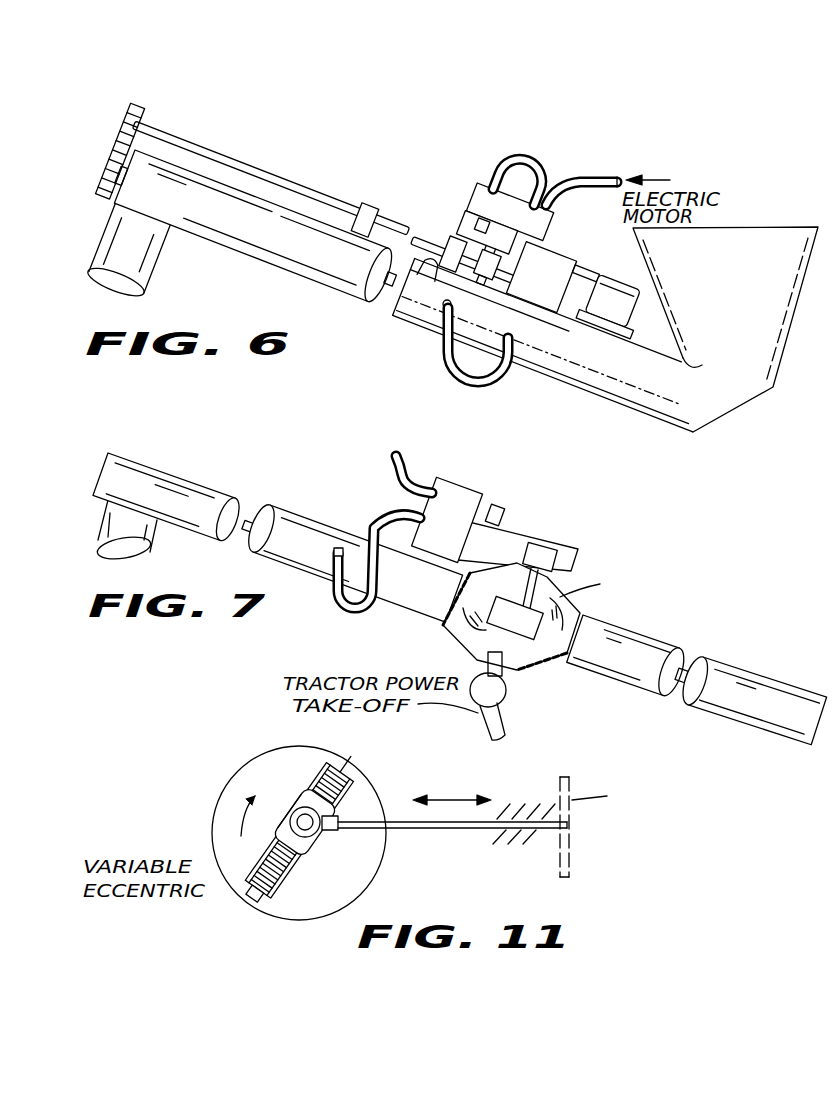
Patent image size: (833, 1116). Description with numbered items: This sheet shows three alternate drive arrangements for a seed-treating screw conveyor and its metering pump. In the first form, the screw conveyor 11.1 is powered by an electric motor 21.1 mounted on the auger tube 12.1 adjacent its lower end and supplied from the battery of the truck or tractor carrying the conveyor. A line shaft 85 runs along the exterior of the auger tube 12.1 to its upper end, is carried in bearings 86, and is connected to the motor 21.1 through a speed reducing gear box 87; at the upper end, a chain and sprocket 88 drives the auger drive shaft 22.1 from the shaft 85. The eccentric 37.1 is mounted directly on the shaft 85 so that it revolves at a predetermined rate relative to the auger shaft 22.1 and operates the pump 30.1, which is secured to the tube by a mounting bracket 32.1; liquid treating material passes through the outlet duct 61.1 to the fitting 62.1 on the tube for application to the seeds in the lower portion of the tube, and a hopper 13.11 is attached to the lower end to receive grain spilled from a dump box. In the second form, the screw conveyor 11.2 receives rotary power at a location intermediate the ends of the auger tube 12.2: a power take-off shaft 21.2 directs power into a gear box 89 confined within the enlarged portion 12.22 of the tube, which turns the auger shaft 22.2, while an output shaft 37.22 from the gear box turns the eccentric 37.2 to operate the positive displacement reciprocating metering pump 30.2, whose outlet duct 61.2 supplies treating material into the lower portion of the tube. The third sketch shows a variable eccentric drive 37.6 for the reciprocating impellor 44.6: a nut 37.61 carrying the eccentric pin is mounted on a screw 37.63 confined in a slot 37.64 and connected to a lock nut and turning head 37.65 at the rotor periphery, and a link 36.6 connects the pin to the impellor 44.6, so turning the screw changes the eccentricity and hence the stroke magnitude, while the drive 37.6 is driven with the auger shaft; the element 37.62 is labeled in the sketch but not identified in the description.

In FIG. 6, the chain and sprocket 88 is at (118, 143).
In FIG. 6, the line shaft 85 is at (280, 180).
In FIG. 6, the bearings 86 is at (368, 205).
In FIG. 6, the auger drive shaft 22.1 is at (120, 170).
In FIG. 6, the screw conveyor 11.1 is at (273, 250).
In FIG. 6, the pump 30.1 is at (470, 187).
In FIG. 6, the mounting bracket 32.1 is at (467, 228).
In FIG. 6, the outlet duct 61.1 is at (545, 168).
In FIG. 6, the speed reducing gear box 87 is at (550, 263).
In FIG. 6, the electric motor 21.1 is at (627, 300).
In FIG. 6, the hopper 13.11 is at (762, 342).
In FIG. 6, the auger tube 12.1 is at (667, 412).
In FIG. 6, the fitting 62.1 is at (443, 300).
In FIG. 6, the eccentric 37.1 is at (482, 272).
In FIG. 7, the metering pump 30.2 is at (455, 500).
In FIG. 7, the eccentric 37.2 is at (532, 550).
In FIG. 7, the output shaft 37.22 is at (530, 560).
In FIG. 7, the enlarged portion 12.22 is at (535, 663).
In FIG. 7, the auger shaft 22.2 is at (573, 637).
In FIG. 7, the screw conveyor 11.2 is at (663, 644).
In FIG. 7, the auger tube 12.2 is at (640, 677).
In FIG. 7, the gear box 89 is at (493, 623).
In FIG. 7, the power take-off shaft 21.2 is at (503, 723).
In FIG. 7, the outlet duct 61.2 is at (343, 612).
In FIG. 11, the eccentric drive 37.6 is at (290, 905).
In FIG. 11, the nut 37.61 is at (313, 840).
In FIG. 11, the eccentric plate 37.62 is at (295, 806).
In FIG. 11, the screw 37.63 is at (356, 780).
In FIG. 11, the slot 37.64 is at (267, 850).
In FIG. 11, the lock nut and turning head 37.65 is at (233, 910).
In FIG. 11, the link 36.6 is at (440, 831).
In FIG. 11, the reciprocating impellor 44.6 is at (570, 853).